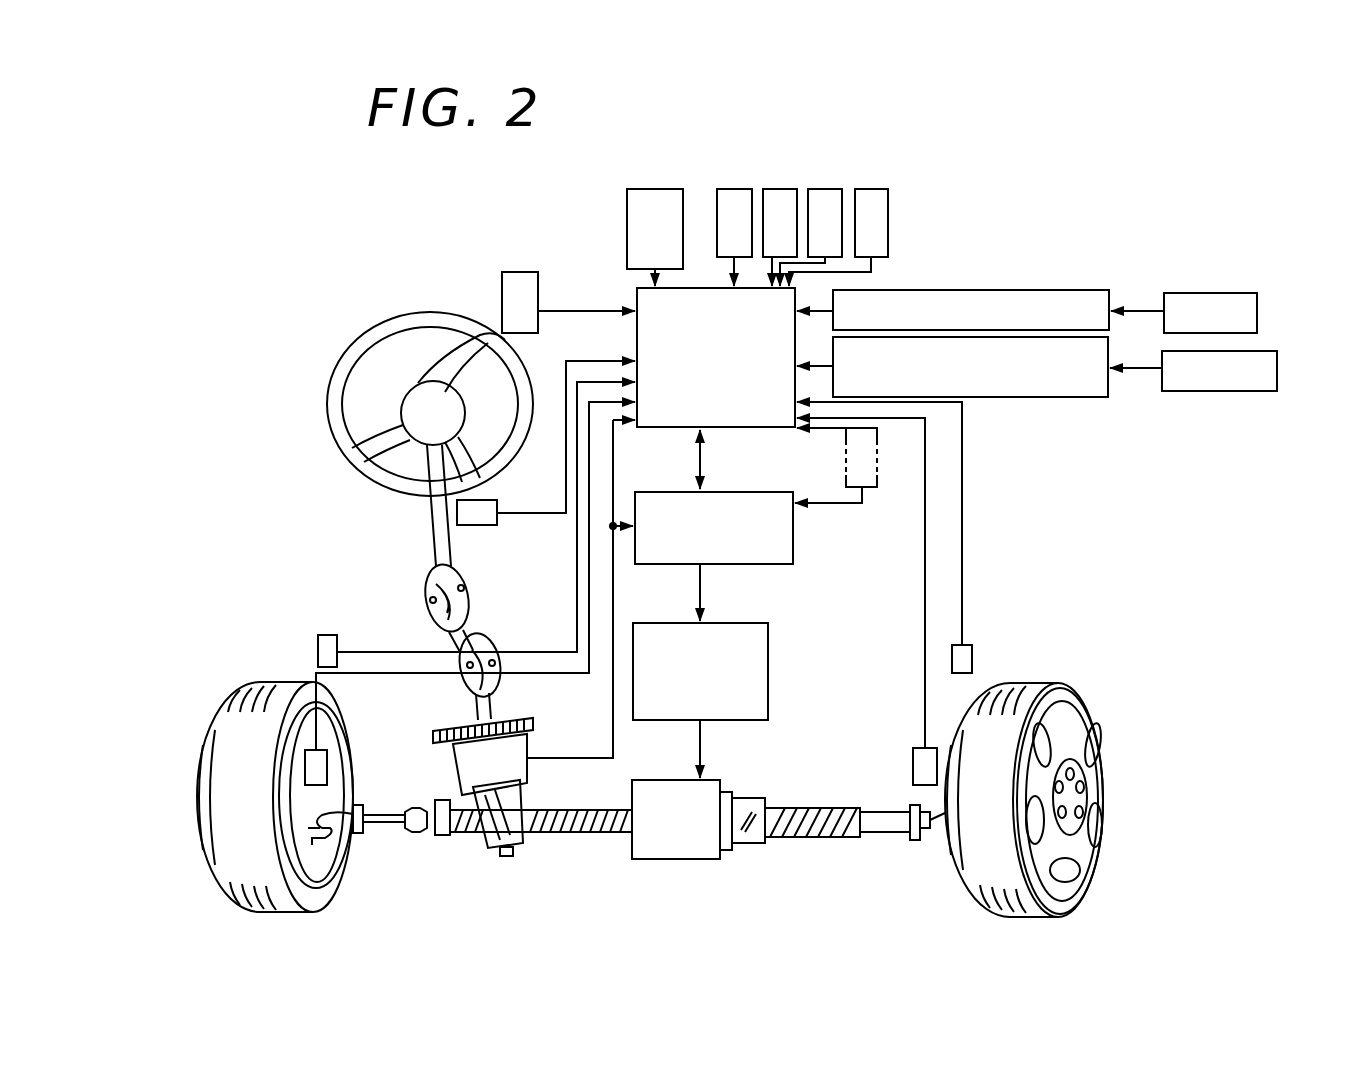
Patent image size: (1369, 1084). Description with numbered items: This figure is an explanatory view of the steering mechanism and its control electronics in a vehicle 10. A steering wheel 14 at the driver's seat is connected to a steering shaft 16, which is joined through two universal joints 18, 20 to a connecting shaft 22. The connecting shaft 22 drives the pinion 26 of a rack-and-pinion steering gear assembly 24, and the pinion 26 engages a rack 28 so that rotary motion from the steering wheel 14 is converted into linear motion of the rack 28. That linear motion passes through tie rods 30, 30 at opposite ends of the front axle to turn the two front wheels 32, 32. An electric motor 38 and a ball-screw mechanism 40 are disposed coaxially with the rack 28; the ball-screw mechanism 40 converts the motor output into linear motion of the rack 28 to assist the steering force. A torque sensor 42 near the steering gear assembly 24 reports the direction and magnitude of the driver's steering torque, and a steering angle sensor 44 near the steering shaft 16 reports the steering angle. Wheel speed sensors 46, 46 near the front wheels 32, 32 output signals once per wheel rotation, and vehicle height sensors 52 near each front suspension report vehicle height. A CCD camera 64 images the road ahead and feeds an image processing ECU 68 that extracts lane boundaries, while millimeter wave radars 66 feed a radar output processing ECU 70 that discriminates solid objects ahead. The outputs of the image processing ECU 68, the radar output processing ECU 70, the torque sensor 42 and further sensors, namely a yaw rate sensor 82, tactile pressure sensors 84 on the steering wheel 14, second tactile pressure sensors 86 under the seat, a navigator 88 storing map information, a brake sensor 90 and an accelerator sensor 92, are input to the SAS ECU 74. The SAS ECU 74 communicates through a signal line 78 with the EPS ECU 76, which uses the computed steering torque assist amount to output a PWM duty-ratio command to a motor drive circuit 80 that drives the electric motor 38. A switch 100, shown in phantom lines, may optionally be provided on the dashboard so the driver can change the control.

The vehicle 10 is at (1015, 598).
The steering wheel 14 is at (352, 358).
The steering shaft 16 is at (432, 522).
The universal joint 18 is at (470, 578).
The universal joint 20 is at (462, 680).
The connecting shaft 22 is at (492, 713).
The rack-and-pinion steering gear assembly 24 is at (453, 840).
The pinion 26 is at (490, 850).
The rack 28 is at (540, 808).
The tie rod 30 is at (335, 817).
The front wheel 32 is at (258, 684).
The electric motor 38 is at (683, 862).
The ball-screw mechanism 40 is at (812, 805).
The torque sensor 42 is at (530, 745).
The steering angle sensor 44 is at (482, 500).
The wheel speed sensor 46 is at (305, 750).
The vehicle height sensor 52 is at (318, 640).
The CCD camera 64 is at (1257, 313).
The millimeter wave radar 66 is at (1277, 371).
The image processing ECU 68 is at (1020, 290).
The radar output processing ECU 70 is at (1043, 397).
The SAS ECU 74 is at (760, 430).
The EPS ECU 76 is at (795, 527).
The signal line 78 is at (698, 460).
The motor drive circuit 80 is at (770, 652).
The yaw rate sensor 82 is at (728, 189).
The tactile pressure sensor 84 is at (515, 272).
The second tactile pressure sensor 86 is at (782, 189).
The navigator 88 is at (641, 189).
The brake sensor 90 is at (830, 189).
The accelerator sensor 92 is at (873, 189).
The switch 100 is at (878, 480).